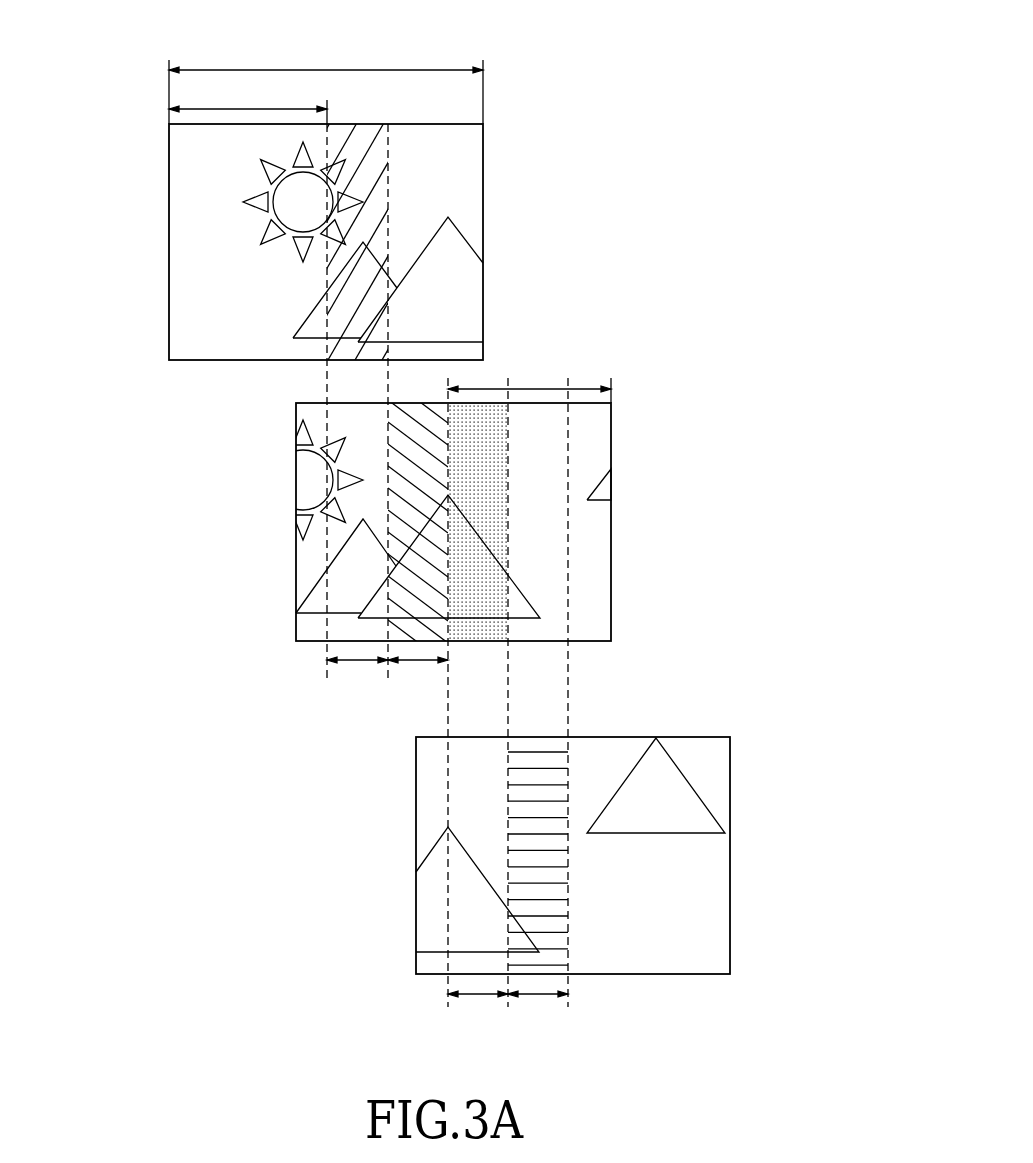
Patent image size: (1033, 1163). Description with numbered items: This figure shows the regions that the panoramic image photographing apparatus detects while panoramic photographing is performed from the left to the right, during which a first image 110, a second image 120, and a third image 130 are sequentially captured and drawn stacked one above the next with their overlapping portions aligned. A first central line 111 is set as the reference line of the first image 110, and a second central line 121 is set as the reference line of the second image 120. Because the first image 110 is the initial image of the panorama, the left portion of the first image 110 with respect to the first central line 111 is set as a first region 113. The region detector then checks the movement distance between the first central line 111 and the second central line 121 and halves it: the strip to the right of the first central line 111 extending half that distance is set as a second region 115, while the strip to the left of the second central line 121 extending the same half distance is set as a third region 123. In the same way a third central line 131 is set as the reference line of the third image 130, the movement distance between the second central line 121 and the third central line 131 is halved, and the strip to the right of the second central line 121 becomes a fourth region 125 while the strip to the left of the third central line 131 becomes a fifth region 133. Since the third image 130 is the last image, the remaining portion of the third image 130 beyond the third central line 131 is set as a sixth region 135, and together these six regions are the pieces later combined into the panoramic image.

The first image 110 is at (168, 262).
The first central line 111 is at (332, 116).
The first region 113 is at (183, 197).
The second region 115 is at (380, 192).
The second image 120 is at (295, 576).
The second central line 121 is at (453, 648).
The third region 123 is at (405, 497).
The fourth region 125 is at (497, 542).
The third image 130 is at (415, 816).
The third central line 131 is at (574, 980).
The fifth region 133 is at (540, 737).
The sixth region 135 is at (720, 783).